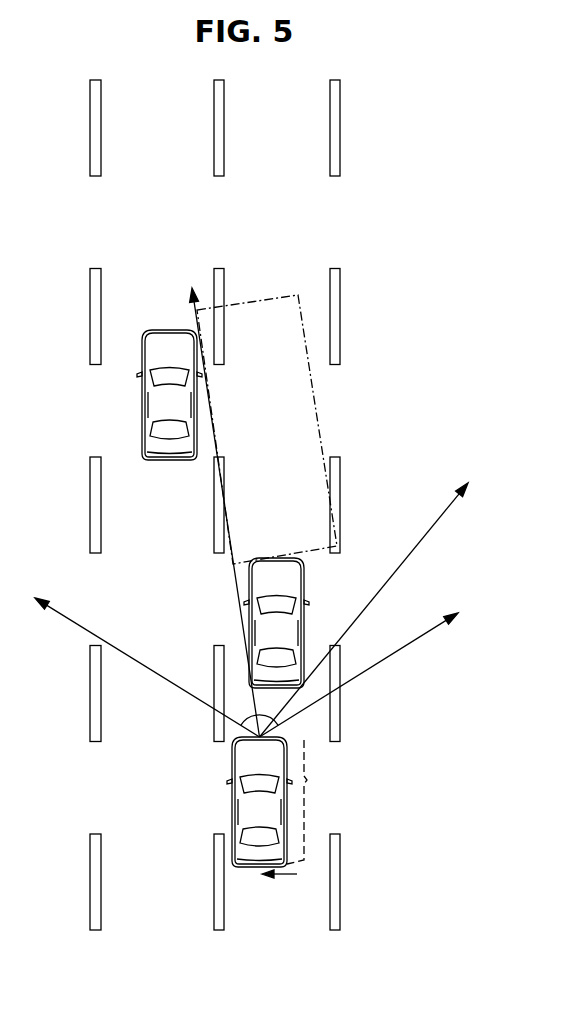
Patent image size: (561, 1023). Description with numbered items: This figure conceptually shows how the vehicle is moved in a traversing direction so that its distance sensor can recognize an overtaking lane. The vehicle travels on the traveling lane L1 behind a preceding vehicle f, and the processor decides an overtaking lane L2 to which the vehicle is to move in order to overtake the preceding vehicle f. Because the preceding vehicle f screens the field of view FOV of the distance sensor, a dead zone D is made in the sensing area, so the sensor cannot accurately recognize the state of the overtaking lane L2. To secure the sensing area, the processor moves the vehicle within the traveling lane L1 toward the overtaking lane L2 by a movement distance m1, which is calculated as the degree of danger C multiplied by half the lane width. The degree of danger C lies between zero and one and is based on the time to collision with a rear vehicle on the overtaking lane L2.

The traveling lane L1 is at (295, 103).
The overtaking lane L2 is at (141, 102).
The preceding vehicle f is at (280, 625).
The dead zone D is at (252, 712).
The field of view FOV is at (283, 722).
The degree of danger C is at (270, 807).
The movement distance in traversing direction m1 is at (284, 884).